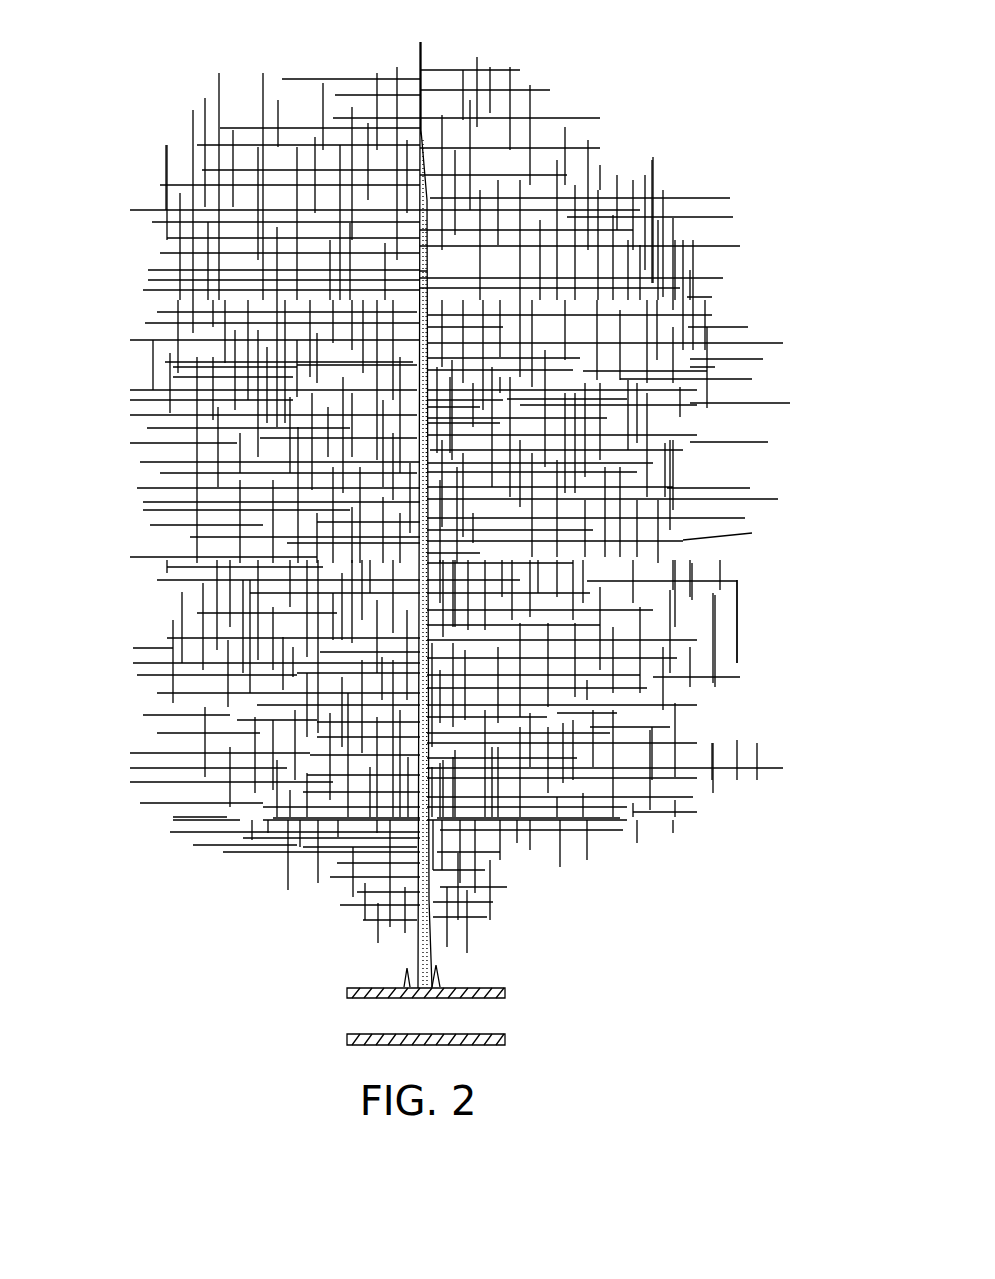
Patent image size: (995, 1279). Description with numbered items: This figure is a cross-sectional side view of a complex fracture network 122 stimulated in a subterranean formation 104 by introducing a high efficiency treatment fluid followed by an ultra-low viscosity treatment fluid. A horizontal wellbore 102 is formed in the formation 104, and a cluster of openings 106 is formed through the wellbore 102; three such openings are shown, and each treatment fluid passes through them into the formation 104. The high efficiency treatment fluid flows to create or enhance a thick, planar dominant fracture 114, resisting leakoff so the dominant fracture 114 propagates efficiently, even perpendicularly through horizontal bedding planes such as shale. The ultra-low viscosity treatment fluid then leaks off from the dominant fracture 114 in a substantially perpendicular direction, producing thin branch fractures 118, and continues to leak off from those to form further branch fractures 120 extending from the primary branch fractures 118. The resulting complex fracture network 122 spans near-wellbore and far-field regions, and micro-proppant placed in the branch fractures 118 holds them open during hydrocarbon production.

The horizontal wellbore 102 is at (478, 987).
The subterranean formation 104 is at (630, 906).
The openings 106 is at (407, 973).
The dominant fracture 114 is at (427, 271).
The branch fractures 118 is at (147, 341).
The branch fractures 120 is at (166, 152).
The complex fracture network 122 is at (650, 102).